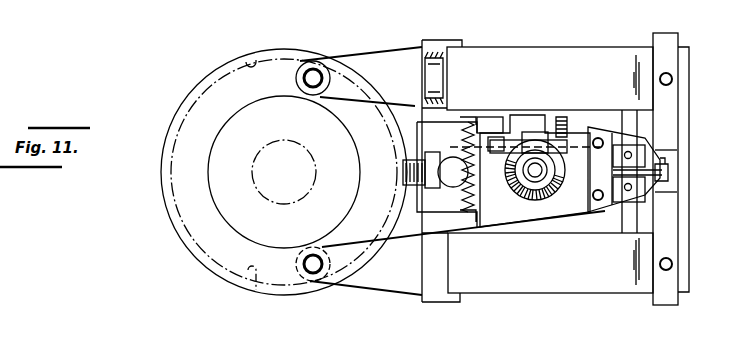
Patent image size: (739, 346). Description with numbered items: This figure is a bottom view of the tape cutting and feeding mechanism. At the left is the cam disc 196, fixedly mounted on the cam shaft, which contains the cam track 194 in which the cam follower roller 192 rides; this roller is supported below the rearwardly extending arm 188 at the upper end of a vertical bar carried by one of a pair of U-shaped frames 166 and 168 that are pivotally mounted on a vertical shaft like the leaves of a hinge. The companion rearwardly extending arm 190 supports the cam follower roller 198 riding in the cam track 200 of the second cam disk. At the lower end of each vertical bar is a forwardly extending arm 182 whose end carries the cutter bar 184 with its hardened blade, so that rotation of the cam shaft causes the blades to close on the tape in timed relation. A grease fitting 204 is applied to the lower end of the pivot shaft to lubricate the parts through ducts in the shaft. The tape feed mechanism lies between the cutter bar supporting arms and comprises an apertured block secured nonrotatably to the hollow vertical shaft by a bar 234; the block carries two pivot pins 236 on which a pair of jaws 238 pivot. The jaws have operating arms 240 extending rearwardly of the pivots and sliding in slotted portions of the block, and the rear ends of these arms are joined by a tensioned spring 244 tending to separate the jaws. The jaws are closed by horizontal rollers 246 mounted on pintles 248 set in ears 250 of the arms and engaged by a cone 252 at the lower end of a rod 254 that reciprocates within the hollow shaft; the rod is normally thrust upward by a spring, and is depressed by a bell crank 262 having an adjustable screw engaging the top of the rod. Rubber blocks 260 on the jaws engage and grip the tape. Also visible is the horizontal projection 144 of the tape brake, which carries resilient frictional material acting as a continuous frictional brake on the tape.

The horizontal projection 144 is at (672, 173).
The U-shaped frame 166 is at (438, 296).
The U-shaped frame 168 is at (430, 40).
The forwardly extending arm 182 is at (523, 47).
The cutter bar 184 is at (674, 158).
The rearwardly extending arm 188 is at (376, 62).
The rearwardly extending arm 190 is at (375, 281).
The cam follower roller 192 is at (298, 72).
The cam track 194 is at (251, 62).
The cam disc 196 is at (164, 213).
The cam follower roller 198 is at (288, 272).
The cam track 200 is at (257, 290).
The grease fitting 204 is at (402, 172).
The bar 234 is at (497, 228).
The pivot pins 236 is at (595, 128).
The jaws 238 is at (652, 190).
The operating arms 240 is at (533, 118).
The tensioned spring 244 is at (460, 148).
The horizontal rollers 246 is at (545, 130).
The pintles 248 is at (493, 136).
The ears 250 is at (510, 138).
The cone 252 is at (602, 200).
The rod 254 is at (560, 170).
The rubber blocks 260 is at (670, 150).
The bell crank 262 is at (672, 191).